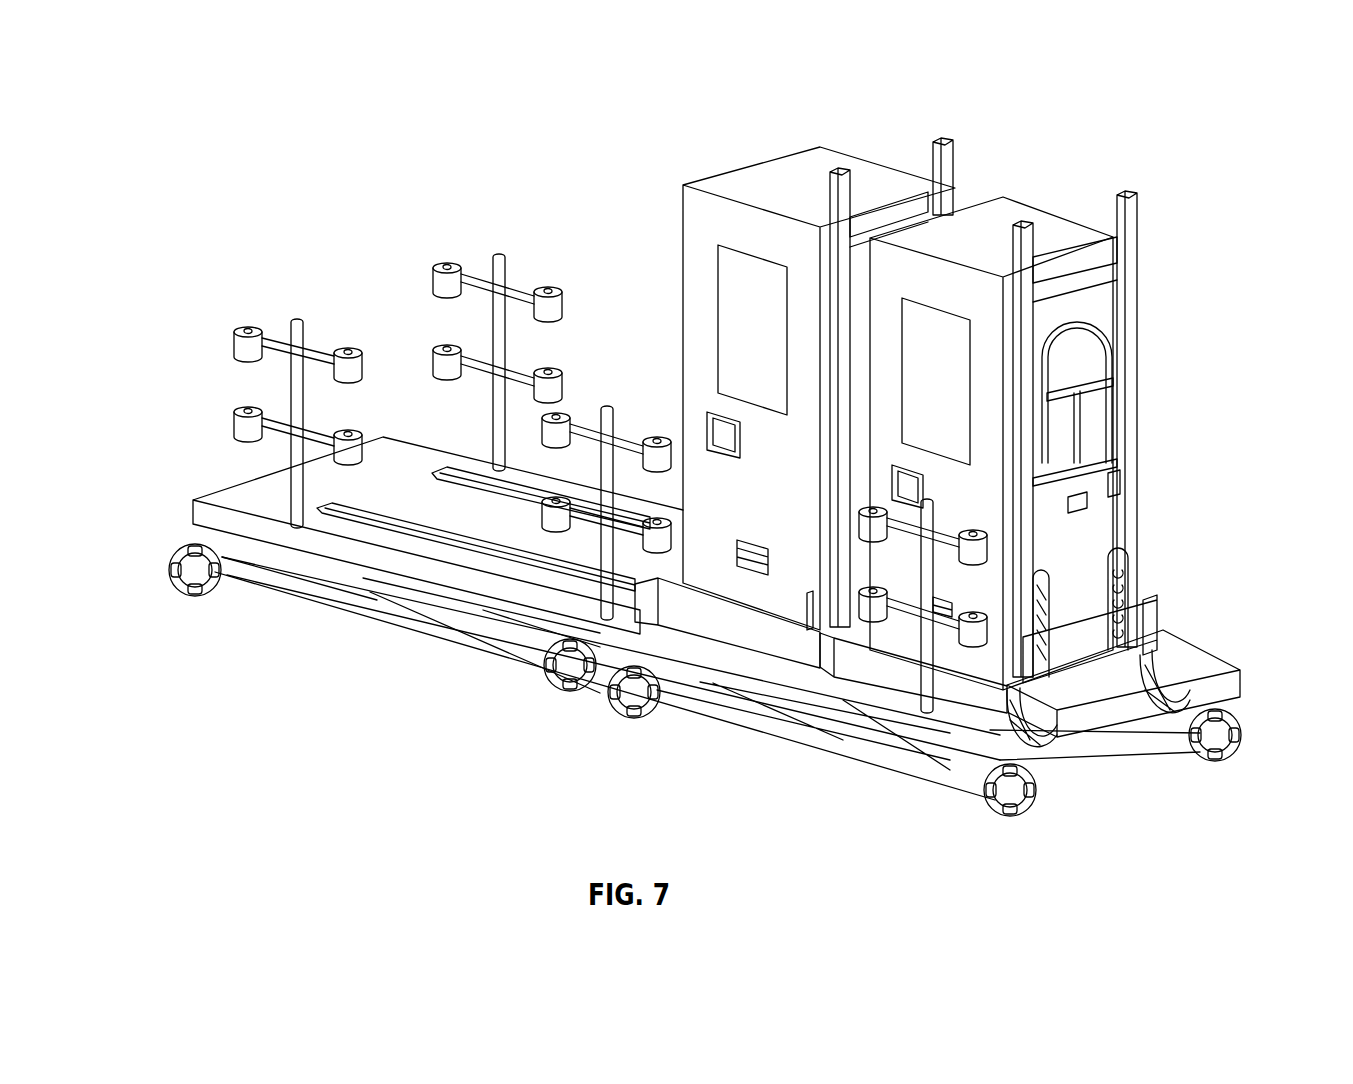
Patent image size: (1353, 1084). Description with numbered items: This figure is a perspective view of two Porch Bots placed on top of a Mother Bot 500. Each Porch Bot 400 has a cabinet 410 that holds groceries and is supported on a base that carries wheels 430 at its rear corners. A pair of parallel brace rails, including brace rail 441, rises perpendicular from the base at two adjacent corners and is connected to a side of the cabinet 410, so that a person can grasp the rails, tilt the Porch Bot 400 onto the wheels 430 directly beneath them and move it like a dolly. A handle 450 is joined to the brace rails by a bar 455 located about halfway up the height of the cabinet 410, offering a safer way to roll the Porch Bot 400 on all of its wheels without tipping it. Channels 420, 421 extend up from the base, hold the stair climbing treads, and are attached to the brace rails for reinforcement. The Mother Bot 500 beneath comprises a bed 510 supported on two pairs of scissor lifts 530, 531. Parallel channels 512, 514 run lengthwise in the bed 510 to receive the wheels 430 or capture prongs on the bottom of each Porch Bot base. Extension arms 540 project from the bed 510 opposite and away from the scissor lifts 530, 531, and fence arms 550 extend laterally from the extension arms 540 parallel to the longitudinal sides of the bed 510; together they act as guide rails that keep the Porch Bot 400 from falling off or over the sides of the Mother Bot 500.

The Porch Bot 400 is at (877, 389).
The cabinet 410 is at (683, 230).
The brace rail 441 is at (1143, 283).
The handle 450 is at (1108, 360).
The bar 455 is at (1108, 462).
The channel 420 is at (1047, 573).
The channel 421 is at (1130, 587).
The wheel 430 is at (1175, 670).
The Mother Bot 500 is at (343, 557).
The bed 510 is at (192, 502).
The channel 512 is at (470, 470).
The channel 514 is at (358, 507).
The scissor lift 530 is at (257, 580).
The scissor lift 531 is at (903, 767).
The extension arm 540 is at (288, 488).
The fence arm 550 is at (278, 340).